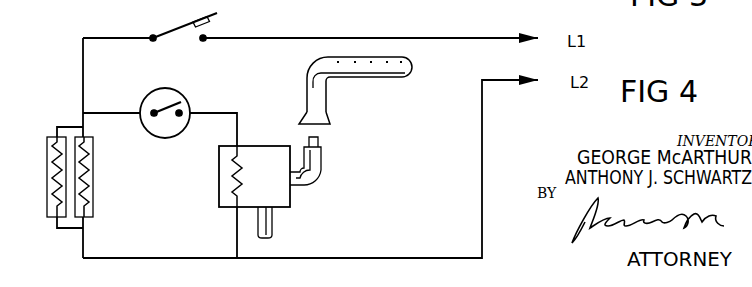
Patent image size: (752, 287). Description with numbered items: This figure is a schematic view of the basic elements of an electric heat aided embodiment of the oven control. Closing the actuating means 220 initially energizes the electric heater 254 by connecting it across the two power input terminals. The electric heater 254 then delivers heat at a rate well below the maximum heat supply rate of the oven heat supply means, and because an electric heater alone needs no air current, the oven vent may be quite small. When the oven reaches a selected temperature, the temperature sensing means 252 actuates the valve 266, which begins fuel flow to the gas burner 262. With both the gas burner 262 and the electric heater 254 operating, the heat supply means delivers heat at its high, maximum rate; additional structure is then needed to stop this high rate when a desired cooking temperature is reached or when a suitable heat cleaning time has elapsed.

The actuating means 220 is at (186, 26).
The temperature sensing means 252 is at (180, 94).
The electric heater 254 is at (93, 177).
The gas burner 262 is at (380, 64).
The valve 266 is at (219, 192).